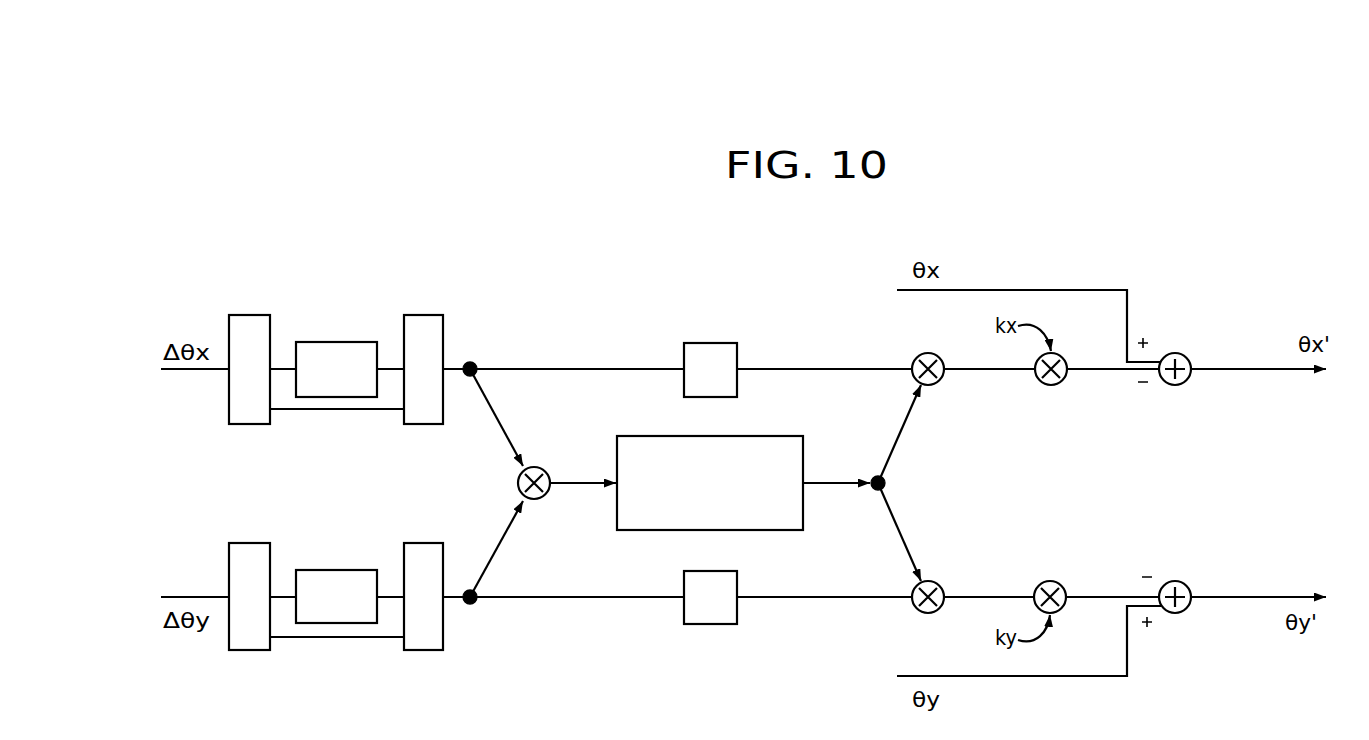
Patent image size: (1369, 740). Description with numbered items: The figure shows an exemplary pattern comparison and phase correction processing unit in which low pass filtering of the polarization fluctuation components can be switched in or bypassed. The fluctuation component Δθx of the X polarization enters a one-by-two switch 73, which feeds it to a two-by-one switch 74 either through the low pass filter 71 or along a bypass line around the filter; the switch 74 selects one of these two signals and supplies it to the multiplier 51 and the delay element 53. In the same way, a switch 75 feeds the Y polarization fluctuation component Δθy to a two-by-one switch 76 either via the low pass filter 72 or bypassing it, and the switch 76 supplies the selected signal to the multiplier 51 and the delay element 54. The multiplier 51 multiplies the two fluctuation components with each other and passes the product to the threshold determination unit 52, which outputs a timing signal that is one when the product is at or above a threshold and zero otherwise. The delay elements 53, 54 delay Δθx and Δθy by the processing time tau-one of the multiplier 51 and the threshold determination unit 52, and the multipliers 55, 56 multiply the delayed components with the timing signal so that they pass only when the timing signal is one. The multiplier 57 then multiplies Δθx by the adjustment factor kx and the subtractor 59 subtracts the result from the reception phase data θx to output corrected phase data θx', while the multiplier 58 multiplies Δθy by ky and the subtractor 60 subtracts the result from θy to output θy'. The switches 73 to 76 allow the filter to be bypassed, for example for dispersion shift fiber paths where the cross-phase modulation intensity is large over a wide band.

The multiplier 51 is at (548, 470).
The threshold determination unit 52 is at (765, 436).
The delay element 53 is at (714, 343).
The delay element 54 is at (714, 571).
The multiplier 55 is at (940, 382).
The multiplier 56 is at (940, 585).
The multiplier 57 is at (1063, 382).
The multiplier 58 is at (1062, 585).
The subtractor 59 is at (1187, 382).
The subtractor 60 is at (1187, 585).
The low pass filter 71 is at (340, 342).
The low pass filter 72 is at (340, 570).
The 1×2 switch 73 is at (258, 315).
The 2×1 switch 74 is at (432, 315).
The switch 75 is at (258, 543).
The 2×1 switch 76 is at (432, 543).